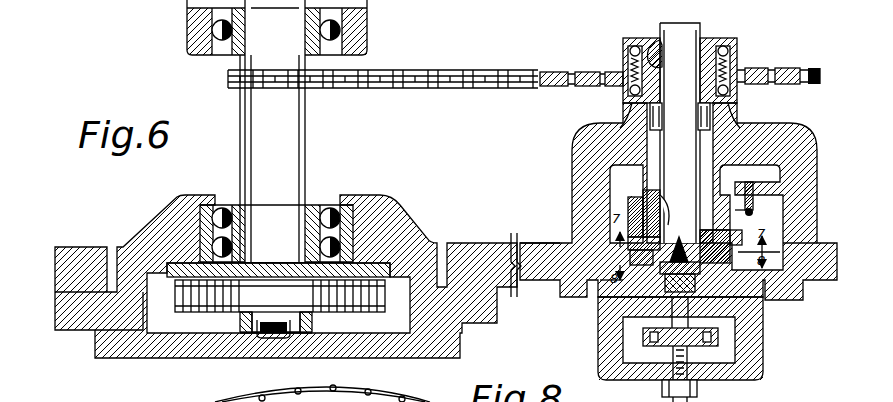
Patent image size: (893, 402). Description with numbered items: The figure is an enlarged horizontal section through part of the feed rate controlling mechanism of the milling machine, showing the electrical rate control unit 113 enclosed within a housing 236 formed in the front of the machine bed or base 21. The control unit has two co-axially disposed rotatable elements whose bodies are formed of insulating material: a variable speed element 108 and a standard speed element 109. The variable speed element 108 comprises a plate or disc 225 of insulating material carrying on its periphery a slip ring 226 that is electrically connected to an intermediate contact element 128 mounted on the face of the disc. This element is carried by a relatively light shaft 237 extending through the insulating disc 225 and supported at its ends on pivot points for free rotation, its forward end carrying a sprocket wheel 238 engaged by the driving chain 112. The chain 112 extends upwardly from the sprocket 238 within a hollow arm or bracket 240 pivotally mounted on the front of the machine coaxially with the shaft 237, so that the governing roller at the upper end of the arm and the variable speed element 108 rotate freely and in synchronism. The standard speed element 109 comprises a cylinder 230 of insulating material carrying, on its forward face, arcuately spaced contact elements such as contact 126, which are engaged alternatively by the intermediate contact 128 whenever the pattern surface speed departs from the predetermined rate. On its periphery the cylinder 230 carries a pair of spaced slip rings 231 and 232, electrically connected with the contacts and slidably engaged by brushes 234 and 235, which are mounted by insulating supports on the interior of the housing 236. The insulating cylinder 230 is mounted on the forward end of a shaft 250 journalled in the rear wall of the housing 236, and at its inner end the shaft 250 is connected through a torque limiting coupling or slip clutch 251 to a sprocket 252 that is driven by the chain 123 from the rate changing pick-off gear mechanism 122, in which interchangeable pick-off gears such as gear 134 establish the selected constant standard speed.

The hollow bed or base 21 is at (535, 278).
The variable speed control element 108 is at (627, 287).
The standard speed element 109 is at (623, 203).
The chain 112 is at (335, 169).
The electrical rate control unit 113 is at (772, 238).
The rate changing pick-off gear mechanism 122 is at (178, 318).
The chain 123 is at (437, 75).
The electrical contact element 126 is at (682, 233).
The intermediate contact element 128 is at (645, 265).
The pick-off gear 134 is at (340, 310).
The insulating disc 225 is at (701, 285).
The slip ring 226 is at (714, 268).
The insulating cylinder 230 is at (647, 197).
The slip ring 231 is at (628, 205).
The slip ring 232 is at (719, 246).
The brush 234 is at (750, 192).
The brush 235 is at (736, 216).
The housing 236 is at (580, 218).
The light shaft 237 is at (686, 330).
The sprocket wheel 238 is at (718, 338).
The hollow arm or bracket 240 is at (598, 352).
The shaft 250 is at (680, 30).
The torque limiting coupling or slip clutch 251 is at (740, 27).
The sprocket 252 is at (790, 68).